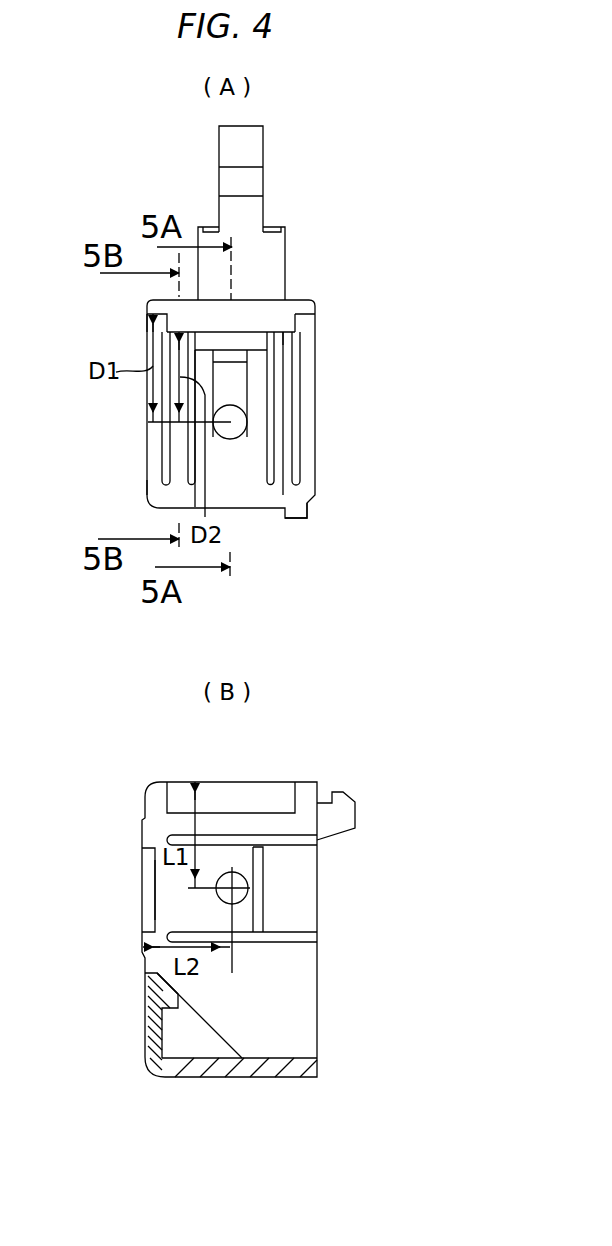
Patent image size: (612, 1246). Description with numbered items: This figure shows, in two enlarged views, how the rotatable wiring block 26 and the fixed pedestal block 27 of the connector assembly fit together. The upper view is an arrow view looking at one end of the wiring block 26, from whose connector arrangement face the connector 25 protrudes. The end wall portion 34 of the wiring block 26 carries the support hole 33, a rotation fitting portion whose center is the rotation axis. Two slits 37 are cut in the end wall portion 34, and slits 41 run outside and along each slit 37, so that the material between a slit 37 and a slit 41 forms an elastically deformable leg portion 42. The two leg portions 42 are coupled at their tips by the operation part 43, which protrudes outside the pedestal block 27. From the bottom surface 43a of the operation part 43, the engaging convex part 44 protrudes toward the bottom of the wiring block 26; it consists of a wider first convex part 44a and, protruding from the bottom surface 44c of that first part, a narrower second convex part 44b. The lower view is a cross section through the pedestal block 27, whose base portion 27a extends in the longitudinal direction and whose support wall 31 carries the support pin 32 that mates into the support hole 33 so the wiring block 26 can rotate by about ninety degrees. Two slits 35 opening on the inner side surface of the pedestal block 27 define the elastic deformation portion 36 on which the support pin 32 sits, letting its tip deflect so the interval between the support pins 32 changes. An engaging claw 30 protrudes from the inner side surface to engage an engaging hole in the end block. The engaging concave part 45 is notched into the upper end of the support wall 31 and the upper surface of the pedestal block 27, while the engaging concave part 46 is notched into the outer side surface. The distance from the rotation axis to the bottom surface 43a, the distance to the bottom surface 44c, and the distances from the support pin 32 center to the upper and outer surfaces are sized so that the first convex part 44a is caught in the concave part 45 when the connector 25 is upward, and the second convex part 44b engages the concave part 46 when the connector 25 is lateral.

The connector 25 is at (250, 207).
The wiring block 26 is at (310, 383).
The pedestal block 27 is at (300, 995).
The base portion 27a is at (155, 1026).
The engaging claw 30 is at (342, 813).
The support wall 31 is at (157, 962).
The support pin 32 is at (248, 885).
The support hole 33 is at (232, 432).
The end wall portion 34 is at (265, 500).
The slit 35 is at (240, 847).
The elastic deformation portion 36 is at (187, 913).
The slit 37 is at (188, 465).
The slit 41 is at (160, 502).
The leg portion 42 is at (178, 438).
The operation part 43 is at (242, 300).
The bottom surface of the operation part 43a is at (155, 315).
The engaging convex part 44 is at (253, 330).
The first convex part 44a is at (180, 318).
The second convex part 44b is at (265, 333).
The bottom surface of the first convex part 44c is at (283, 336).
The engaging concave part 45 is at (232, 800).
The engaging concave part 46 is at (142, 876).